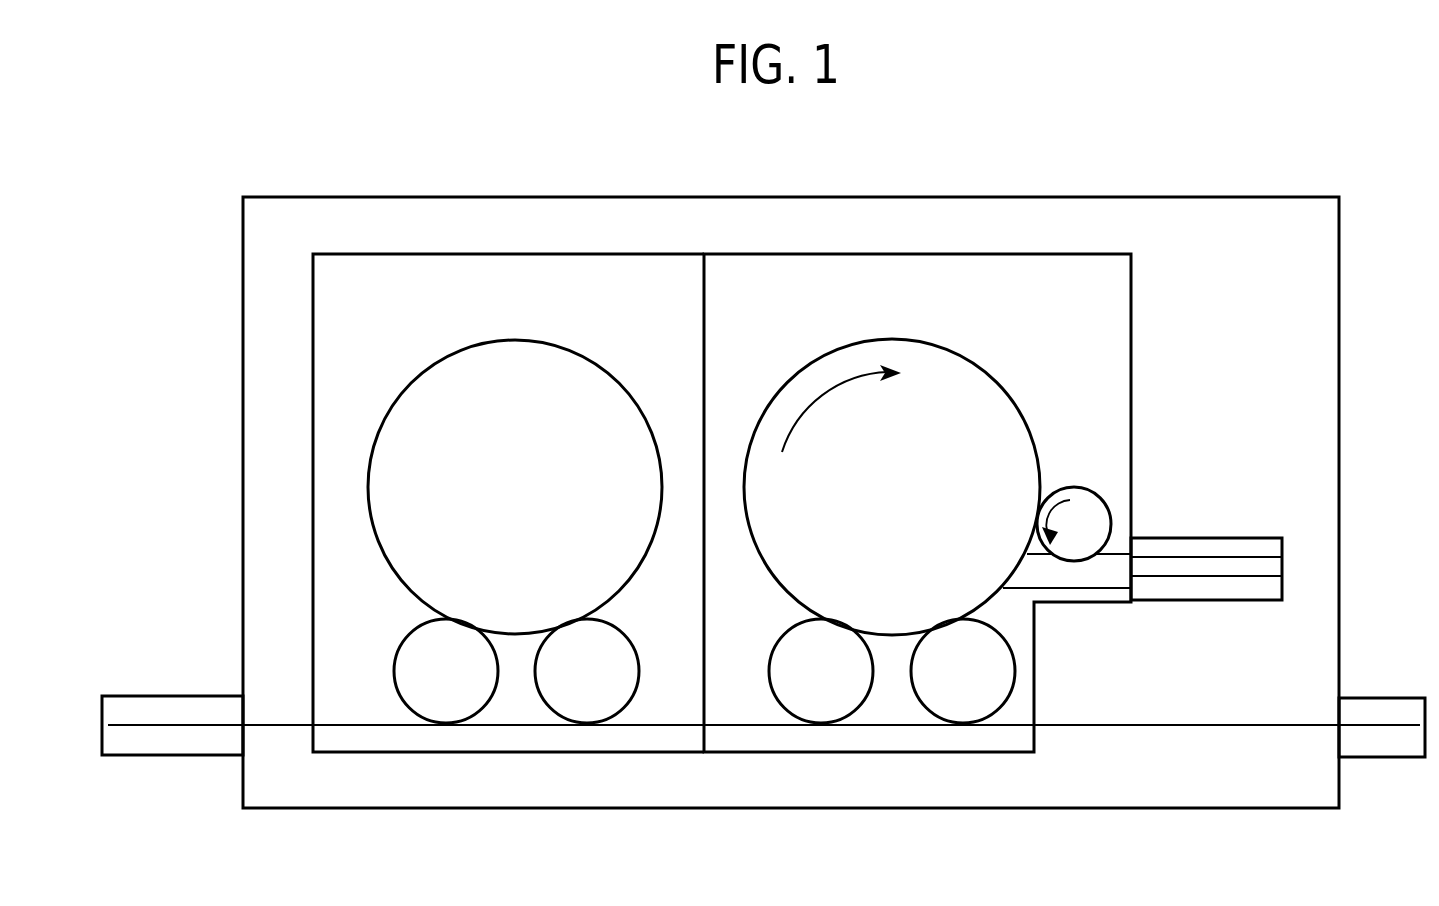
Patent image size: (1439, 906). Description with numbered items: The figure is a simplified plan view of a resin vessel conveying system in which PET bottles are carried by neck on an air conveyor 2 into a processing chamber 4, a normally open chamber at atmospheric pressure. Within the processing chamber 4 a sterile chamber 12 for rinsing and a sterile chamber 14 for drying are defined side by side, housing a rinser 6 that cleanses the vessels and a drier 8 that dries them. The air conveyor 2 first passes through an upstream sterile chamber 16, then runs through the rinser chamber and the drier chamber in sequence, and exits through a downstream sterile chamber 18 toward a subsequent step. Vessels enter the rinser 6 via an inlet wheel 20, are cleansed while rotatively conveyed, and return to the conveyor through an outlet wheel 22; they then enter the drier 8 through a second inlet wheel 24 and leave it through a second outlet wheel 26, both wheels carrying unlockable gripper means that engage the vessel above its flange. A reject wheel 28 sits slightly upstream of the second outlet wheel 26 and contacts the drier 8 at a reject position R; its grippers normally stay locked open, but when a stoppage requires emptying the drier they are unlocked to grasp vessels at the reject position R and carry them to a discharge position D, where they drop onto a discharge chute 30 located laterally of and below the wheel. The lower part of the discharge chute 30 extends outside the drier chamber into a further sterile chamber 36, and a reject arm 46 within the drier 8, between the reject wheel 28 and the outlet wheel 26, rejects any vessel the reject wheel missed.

The air conveyor 2 is at (157, 724).
The processing chamber 4 is at (472, 196).
The rinser 6 is at (589, 360).
The drier 8 is at (976, 365).
The sterile chamber 12 is at (563, 254).
The sterile chamber 14 is at (943, 254).
The sterile chamber 16 is at (157, 756).
The sterile chamber 18 is at (1383, 698).
The inlet wheel 20 is at (402, 640).
The outlet wheel 22 is at (632, 638).
The second inlet wheel 24 is at (772, 655).
The second outlet wheel 26 is at (922, 708).
The reject wheel 28 is at (1080, 488).
The discharge chute 30 is at (1196, 601).
The sterile chamber 36 is at (1195, 538).
The reject arm 46 is at (1019, 561).
The reject position R is at (1037, 514).
The discharge position D is at (1070, 561).